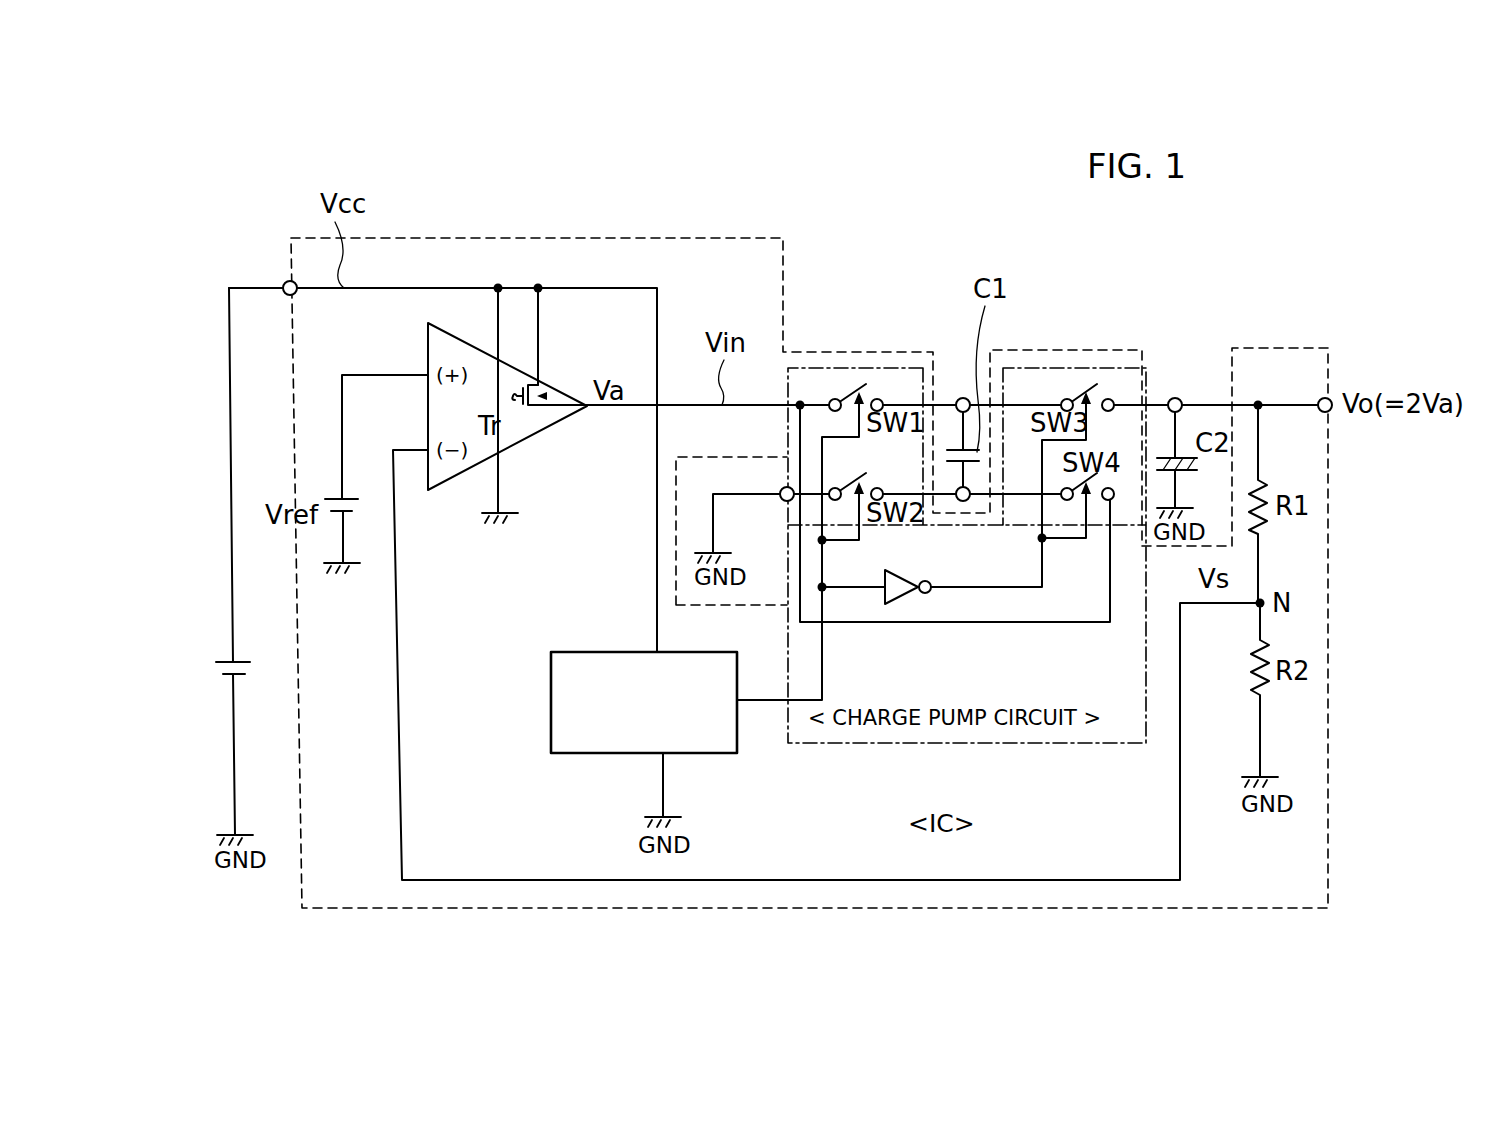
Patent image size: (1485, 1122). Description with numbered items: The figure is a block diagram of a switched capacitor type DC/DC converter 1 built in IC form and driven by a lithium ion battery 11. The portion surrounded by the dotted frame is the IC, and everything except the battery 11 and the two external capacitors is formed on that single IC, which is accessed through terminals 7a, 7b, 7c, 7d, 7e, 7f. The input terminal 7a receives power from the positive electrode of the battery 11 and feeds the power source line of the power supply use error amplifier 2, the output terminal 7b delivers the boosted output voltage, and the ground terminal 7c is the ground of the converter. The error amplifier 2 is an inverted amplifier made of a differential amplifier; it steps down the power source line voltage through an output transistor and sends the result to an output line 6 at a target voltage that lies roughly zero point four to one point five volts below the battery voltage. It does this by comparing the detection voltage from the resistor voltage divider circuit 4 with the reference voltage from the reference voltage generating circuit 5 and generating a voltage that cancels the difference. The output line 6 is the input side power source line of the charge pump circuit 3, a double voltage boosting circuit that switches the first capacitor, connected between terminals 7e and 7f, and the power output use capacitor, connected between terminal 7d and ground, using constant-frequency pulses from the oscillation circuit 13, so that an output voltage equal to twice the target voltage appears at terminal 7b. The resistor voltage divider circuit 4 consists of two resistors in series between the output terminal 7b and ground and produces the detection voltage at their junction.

The switched capacitor type DC/DC converter 1 is at (857, 217).
The power supply use error amplifier 2 is at (560, 390).
The charge pump circuit 3 is at (1083, 366).
The resistor voltage divider circuit 4 is at (1360, 606).
The reference voltage generating circuit 5 is at (335, 498).
The output line 6 is at (633, 410).
The input terminal 7a is at (286, 283).
The output terminal 7b is at (1323, 397).
The ground terminal 7c is at (781, 492).
The terminal 7d is at (1175, 397).
The terminal 7e is at (960, 397).
The terminal 7f is at (964, 502).
The lithium ion battery 11 is at (228, 660).
The oscillation circuit 13 is at (581, 652).